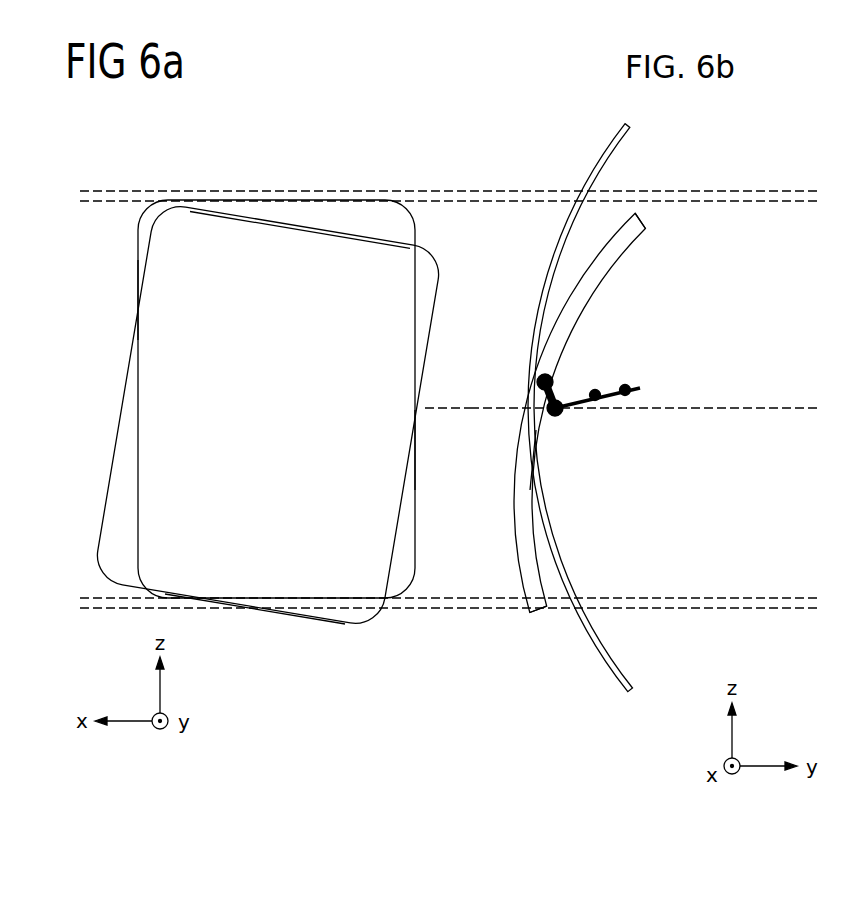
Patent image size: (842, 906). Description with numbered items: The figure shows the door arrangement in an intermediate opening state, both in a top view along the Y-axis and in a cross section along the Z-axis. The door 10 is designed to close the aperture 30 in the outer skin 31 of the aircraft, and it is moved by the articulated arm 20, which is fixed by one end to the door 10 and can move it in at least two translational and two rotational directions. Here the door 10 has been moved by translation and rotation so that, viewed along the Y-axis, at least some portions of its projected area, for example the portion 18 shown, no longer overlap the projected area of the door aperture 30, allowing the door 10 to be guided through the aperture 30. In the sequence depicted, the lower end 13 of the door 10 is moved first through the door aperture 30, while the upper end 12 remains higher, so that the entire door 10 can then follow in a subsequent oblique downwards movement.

In FIG. 6A, the door 10 is at (437, 273).
In FIG. 6B, the door 10 is at (596, 285).
In FIG. 6A, the upper end 12 is at (257, 217).
In FIG. 6B, the upper end 12 is at (643, 218).
In FIG. 6A, the lower end 13 is at (313, 617).
In FIG. 6B, the lower end 13 is at (534, 614).
In FIG. 6A, the portion 18 is at (125, 296).
In FIG. 6B, the portion 18 is at (565, 468).
In FIG. 6B, the articulated arm 20 is at (650, 388).
In FIG. 6A, the aperture 30 is at (332, 212).
In FIG. 6B, the outer skin 31 is at (612, 143).